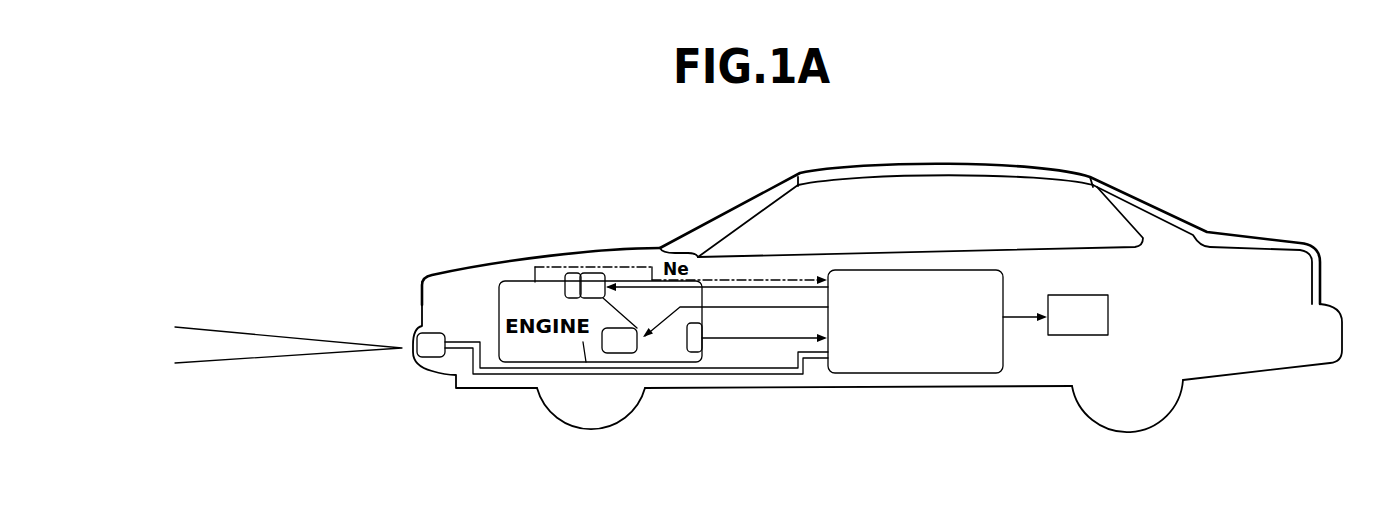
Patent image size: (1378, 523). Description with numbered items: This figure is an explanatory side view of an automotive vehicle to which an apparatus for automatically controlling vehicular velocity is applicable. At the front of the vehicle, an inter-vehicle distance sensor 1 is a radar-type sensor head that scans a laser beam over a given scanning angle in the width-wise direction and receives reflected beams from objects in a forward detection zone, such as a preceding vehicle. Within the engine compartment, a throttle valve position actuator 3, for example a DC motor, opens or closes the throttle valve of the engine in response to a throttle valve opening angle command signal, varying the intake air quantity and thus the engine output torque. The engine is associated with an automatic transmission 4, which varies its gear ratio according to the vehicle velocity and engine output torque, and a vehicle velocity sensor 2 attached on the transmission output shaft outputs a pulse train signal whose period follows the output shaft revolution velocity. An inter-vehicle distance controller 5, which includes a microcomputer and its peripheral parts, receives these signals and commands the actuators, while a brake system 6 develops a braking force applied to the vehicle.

The inter-vehicle distance sensor 1 is at (412, 327).
The vehicle velocity sensor 2 is at (708, 353).
The throttle valve position actuator 3 is at (584, 271).
The automatic transmission 4 is at (648, 360).
The inter-vehicle distance controller 5 is at (935, 382).
The brake system 6 is at (1065, 344).